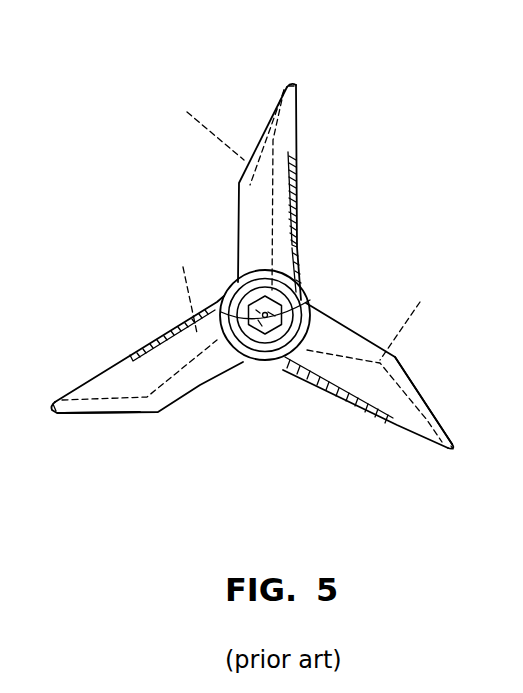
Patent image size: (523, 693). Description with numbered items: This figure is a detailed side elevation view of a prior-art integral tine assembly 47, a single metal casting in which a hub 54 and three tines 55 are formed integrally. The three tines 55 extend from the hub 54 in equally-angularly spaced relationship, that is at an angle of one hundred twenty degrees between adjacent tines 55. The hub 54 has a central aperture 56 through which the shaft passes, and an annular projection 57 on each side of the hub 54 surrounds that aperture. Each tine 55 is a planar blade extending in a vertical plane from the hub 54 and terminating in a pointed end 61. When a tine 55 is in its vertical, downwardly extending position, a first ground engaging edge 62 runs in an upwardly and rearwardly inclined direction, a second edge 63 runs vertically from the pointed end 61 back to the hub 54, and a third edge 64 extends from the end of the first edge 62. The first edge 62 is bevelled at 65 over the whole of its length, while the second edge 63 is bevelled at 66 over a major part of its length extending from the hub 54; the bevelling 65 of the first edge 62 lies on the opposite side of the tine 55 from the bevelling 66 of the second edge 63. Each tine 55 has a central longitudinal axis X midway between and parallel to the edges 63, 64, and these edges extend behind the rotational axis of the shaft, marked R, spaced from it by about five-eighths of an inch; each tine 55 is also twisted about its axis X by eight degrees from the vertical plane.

The integral tine assembly 47 is at (203, 185).
The hub 54 is at (320, 300).
The tine 55 is at (300, 124).
The central aperture 56 is at (272, 326).
The annular projection 57 is at (292, 289).
The pointed end 61 is at (292, 85).
The first ground engaging edge 62 is at (113, 408).
The second edge 63 is at (300, 179).
The third edge 64 is at (236, 226).
The bevel of first edge 65 is at (283, 92).
The bevel of second edge 66 is at (300, 238).